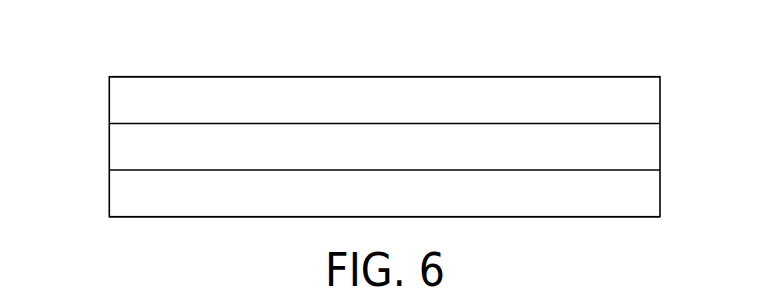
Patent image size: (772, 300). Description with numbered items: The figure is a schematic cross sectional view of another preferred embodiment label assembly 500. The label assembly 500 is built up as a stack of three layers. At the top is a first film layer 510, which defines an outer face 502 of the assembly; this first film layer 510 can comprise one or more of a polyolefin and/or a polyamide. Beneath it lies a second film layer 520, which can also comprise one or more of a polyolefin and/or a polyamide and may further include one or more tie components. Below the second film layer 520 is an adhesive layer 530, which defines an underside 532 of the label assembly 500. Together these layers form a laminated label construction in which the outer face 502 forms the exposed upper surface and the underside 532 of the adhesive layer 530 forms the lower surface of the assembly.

The label assembly 500 is at (71, 116).
The outer face 502 is at (592, 76).
The first film layer 510 is at (640, 105).
The second film layer 520 is at (640, 152).
The adhesive layer 530 is at (640, 200).
The underside 532 is at (600, 217).